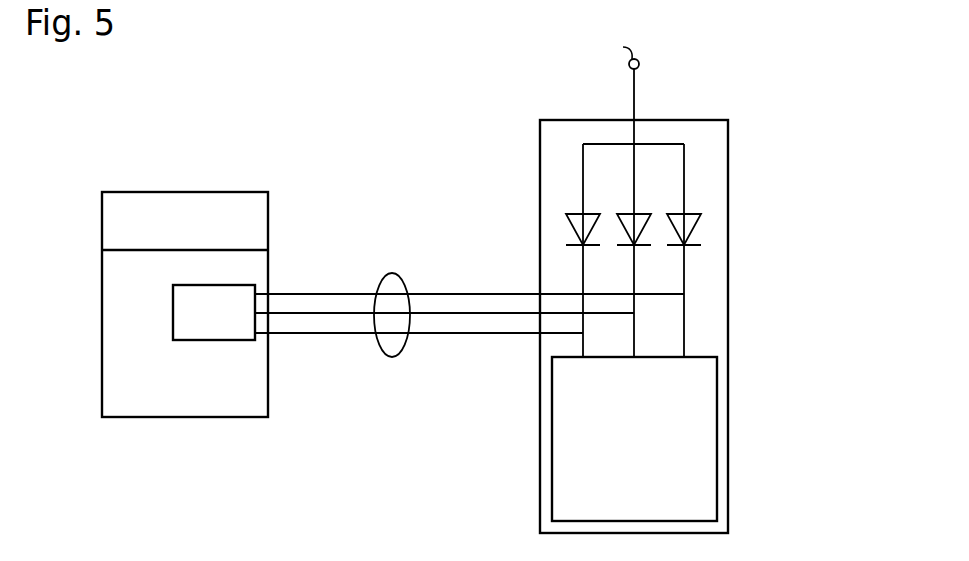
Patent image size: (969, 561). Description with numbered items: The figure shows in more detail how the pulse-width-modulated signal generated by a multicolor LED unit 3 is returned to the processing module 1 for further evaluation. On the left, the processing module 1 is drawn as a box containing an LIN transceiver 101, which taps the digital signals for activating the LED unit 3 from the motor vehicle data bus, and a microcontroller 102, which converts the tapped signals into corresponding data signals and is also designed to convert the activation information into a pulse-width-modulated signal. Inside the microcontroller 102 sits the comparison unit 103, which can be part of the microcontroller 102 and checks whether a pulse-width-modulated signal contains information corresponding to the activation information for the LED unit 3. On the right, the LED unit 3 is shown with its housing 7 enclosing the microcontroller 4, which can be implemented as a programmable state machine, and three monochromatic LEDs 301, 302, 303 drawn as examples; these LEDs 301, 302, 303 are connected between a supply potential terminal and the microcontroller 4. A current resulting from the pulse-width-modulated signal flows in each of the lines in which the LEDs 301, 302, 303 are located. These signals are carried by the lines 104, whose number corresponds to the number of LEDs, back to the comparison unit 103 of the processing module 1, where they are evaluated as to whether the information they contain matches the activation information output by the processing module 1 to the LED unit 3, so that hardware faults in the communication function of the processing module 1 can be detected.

The processing module 1 is at (278, 214).
The LIN transceiver 101 is at (185, 229).
The microcontroller 102 is at (185, 333).
The comparison unit 103 is at (214, 312).
The lines 104 is at (392, 357).
The multicolor LED unit 3 is at (697, 120).
The housing 7 is at (739, 160).
The monochromatic LED 301 is at (565, 230).
The monochromatic LED 302 is at (640, 223).
The monochromatic LED 303 is at (700, 223).
The microcontroller 4 is at (717, 470).